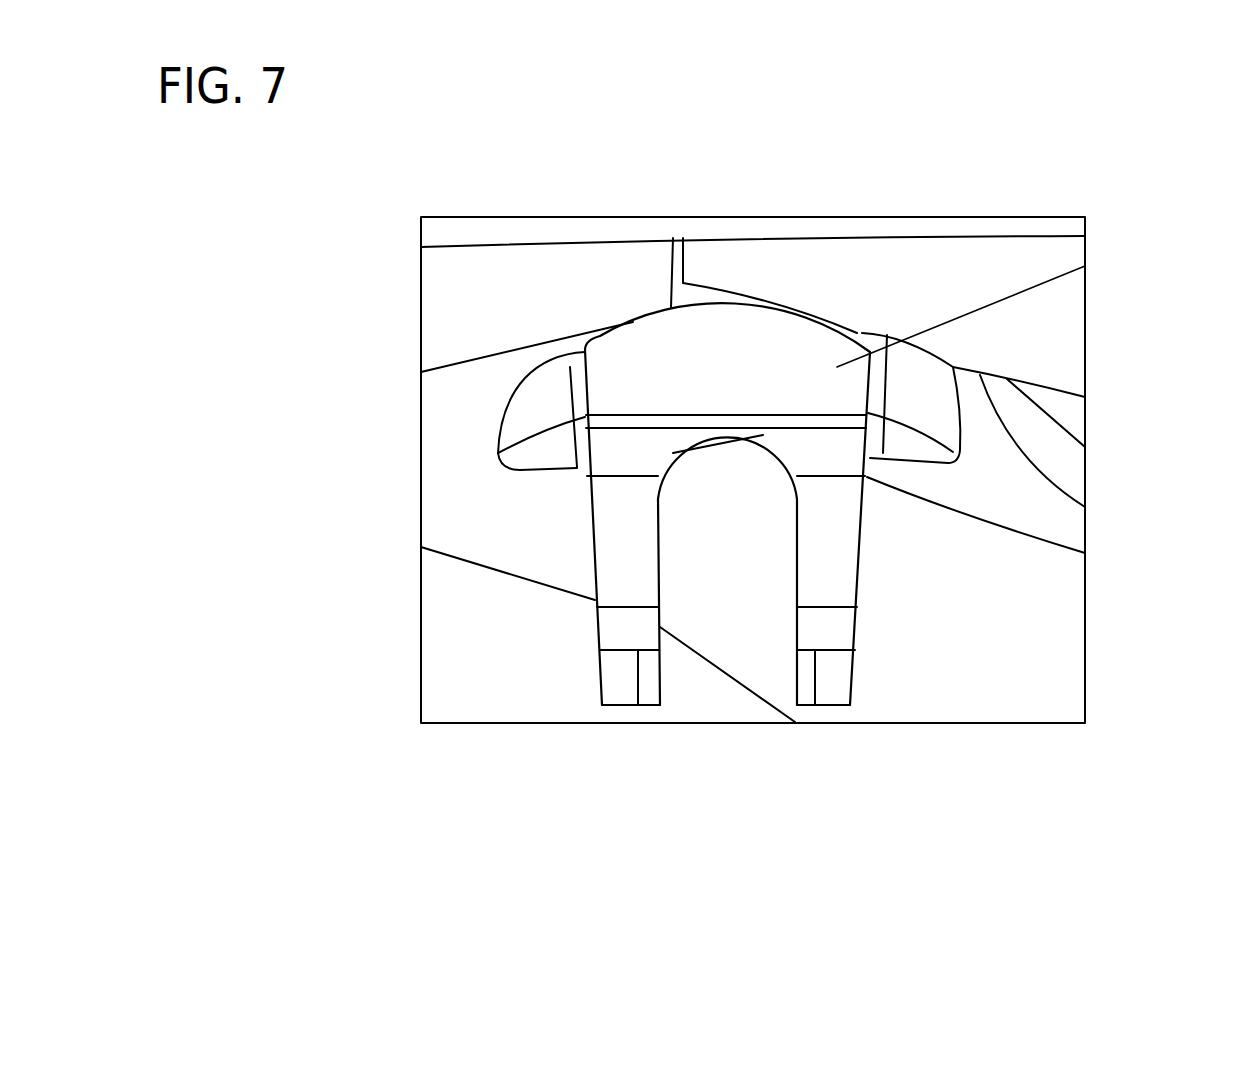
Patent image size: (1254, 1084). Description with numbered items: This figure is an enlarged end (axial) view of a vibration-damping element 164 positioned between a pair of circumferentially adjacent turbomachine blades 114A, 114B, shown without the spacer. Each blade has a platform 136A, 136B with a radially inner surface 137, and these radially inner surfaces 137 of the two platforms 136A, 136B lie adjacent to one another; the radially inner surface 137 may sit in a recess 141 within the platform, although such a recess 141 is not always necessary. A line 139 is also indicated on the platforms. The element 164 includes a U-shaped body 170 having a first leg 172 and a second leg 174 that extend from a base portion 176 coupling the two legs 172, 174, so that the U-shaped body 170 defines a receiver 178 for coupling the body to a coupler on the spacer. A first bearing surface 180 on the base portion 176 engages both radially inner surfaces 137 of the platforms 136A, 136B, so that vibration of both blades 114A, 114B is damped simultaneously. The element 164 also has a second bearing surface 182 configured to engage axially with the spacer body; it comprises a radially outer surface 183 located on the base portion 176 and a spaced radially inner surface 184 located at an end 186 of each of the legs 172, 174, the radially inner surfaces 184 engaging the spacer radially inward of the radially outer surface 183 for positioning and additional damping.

The turbomachine blade 114A is at (412, 293).
The turbomachine blade 114B is at (1087, 294).
The platform 136A is at (487, 280).
The platform 136B is at (907, 263).
The radially inner surface 137 is at (463, 367).
The liner top edge 139 is at (570, 240).
The recess 141 is at (570, 367).
The element 164 is at (752, 350).
The U-shaped body 170 is at (818, 316).
The first leg 172 is at (615, 547).
The second leg 174 is at (847, 545).
The base portion 176 is at (717, 333).
The receiver 178 is at (753, 638).
The bearing surface 180 is at (627, 322).
The bearing surface 182 is at (853, 368).
The radially outer surface 183 is at (1085, 266).
The radially inner surface 184 is at (622, 692).
The end 186 is at (602, 657).